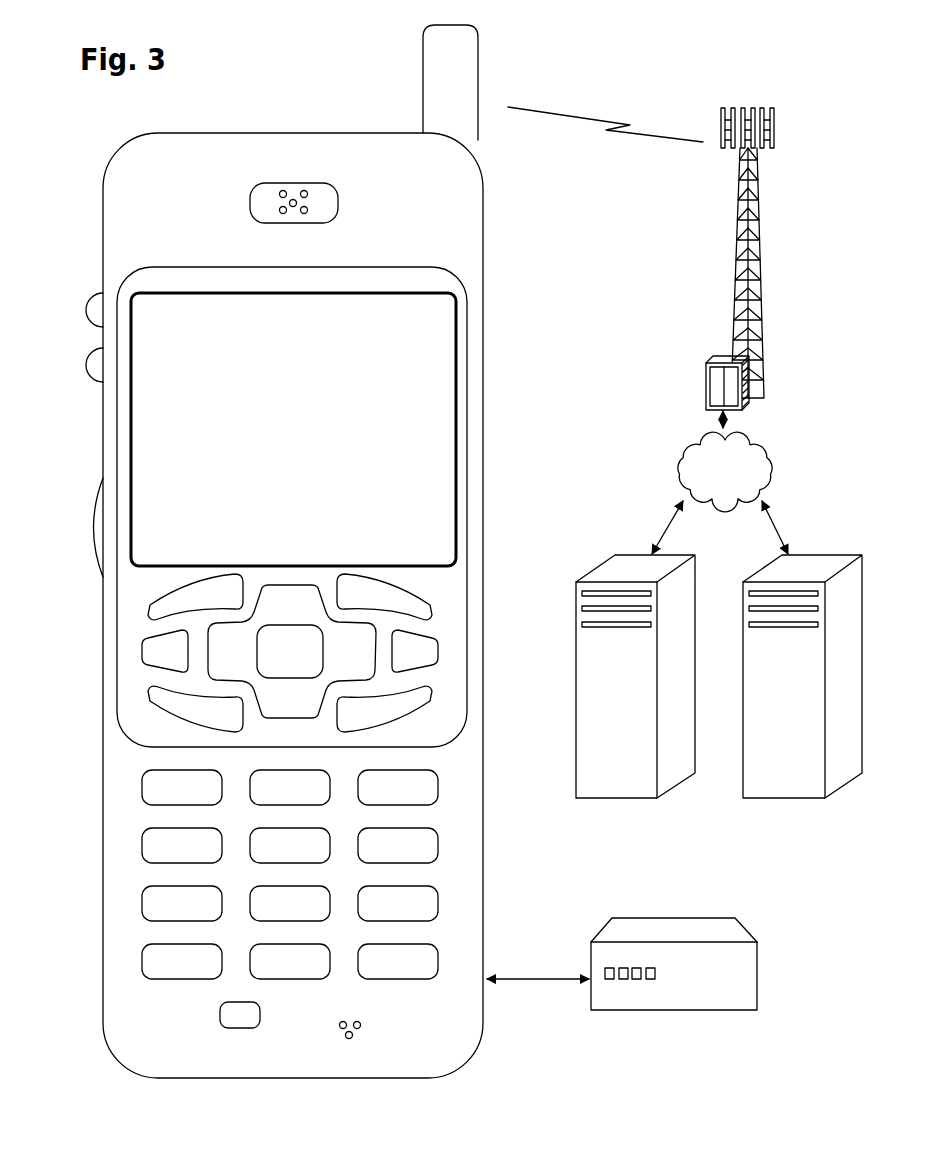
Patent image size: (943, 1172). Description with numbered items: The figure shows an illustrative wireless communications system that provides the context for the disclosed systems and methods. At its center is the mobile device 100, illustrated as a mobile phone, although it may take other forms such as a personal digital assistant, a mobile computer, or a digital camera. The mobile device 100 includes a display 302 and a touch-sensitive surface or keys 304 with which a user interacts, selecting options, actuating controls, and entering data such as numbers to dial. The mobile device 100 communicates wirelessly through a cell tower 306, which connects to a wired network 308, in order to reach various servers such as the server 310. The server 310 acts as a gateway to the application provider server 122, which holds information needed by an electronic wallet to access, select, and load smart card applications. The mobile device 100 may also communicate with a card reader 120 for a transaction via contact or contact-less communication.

The mobile device 100 is at (150, 1078).
The display 302 is at (458, 301).
The keys 304 is at (495, 965).
The cell tower 306 is at (733, 272).
The wired network 308 is at (672, 481).
The application provider server 122 is at (578, 798).
The server 310 is at (747, 798).
The card reader 120 is at (610, 1010).